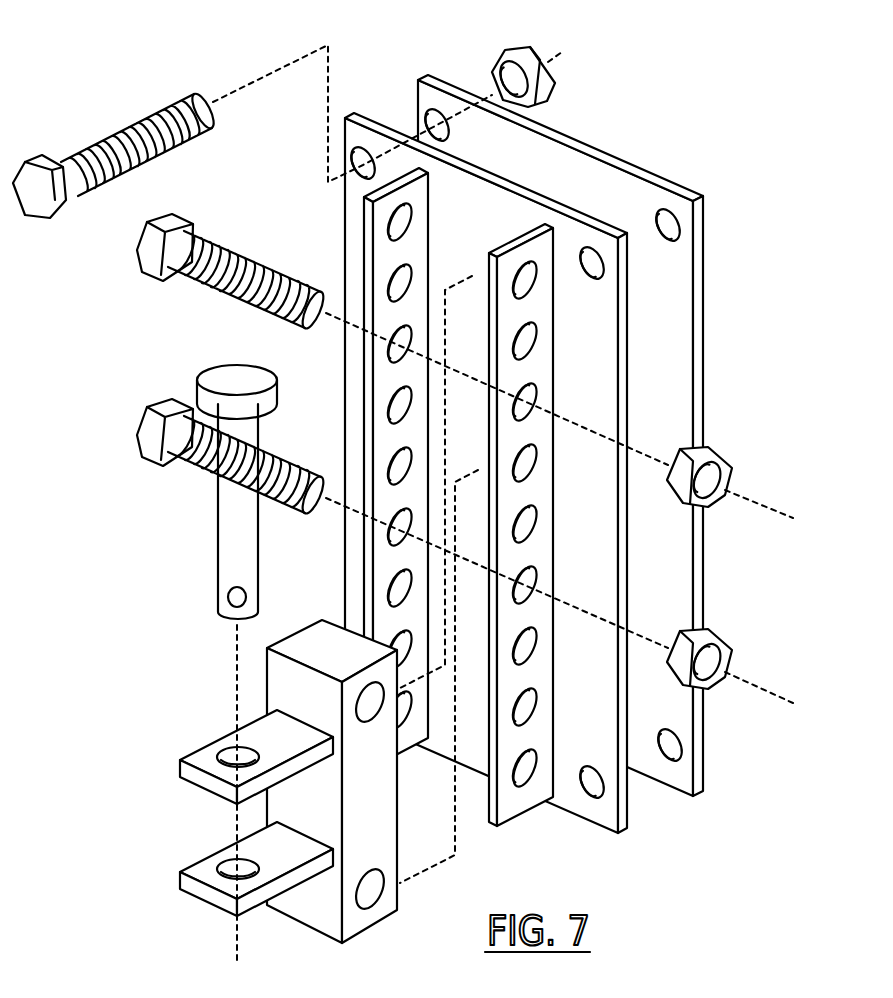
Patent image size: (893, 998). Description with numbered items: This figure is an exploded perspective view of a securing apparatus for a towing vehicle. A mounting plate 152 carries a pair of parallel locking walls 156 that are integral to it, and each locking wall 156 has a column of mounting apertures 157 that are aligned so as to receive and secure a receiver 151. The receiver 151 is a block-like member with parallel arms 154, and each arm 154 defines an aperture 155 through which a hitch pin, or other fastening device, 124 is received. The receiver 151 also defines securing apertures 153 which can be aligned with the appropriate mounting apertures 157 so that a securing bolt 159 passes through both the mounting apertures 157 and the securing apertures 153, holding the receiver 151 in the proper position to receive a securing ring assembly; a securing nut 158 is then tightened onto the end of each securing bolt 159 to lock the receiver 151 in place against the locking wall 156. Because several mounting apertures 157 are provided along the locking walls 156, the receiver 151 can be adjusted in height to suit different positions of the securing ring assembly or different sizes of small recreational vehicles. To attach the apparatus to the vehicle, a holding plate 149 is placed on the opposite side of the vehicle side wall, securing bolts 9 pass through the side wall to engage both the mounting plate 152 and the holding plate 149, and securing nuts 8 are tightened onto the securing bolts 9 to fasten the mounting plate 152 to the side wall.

The securing nut 8 is at (520, 52).
The securing bolt 9 is at (110, 133).
The hitch pin 124 is at (207, 515).
The holding plate 149 is at (707, 362).
The receiver 151 is at (267, 663).
The mounting plate 152 is at (600, 728).
The securing aperture 153 is at (370, 690).
The parallel arm 154 is at (180, 768).
The aperture 155 is at (232, 755).
The parallel locking wall 156 is at (540, 248).
The mounting aperture 157 is at (537, 396).
The securing nut 158 is at (725, 642).
The securing bolt 159 is at (173, 402).